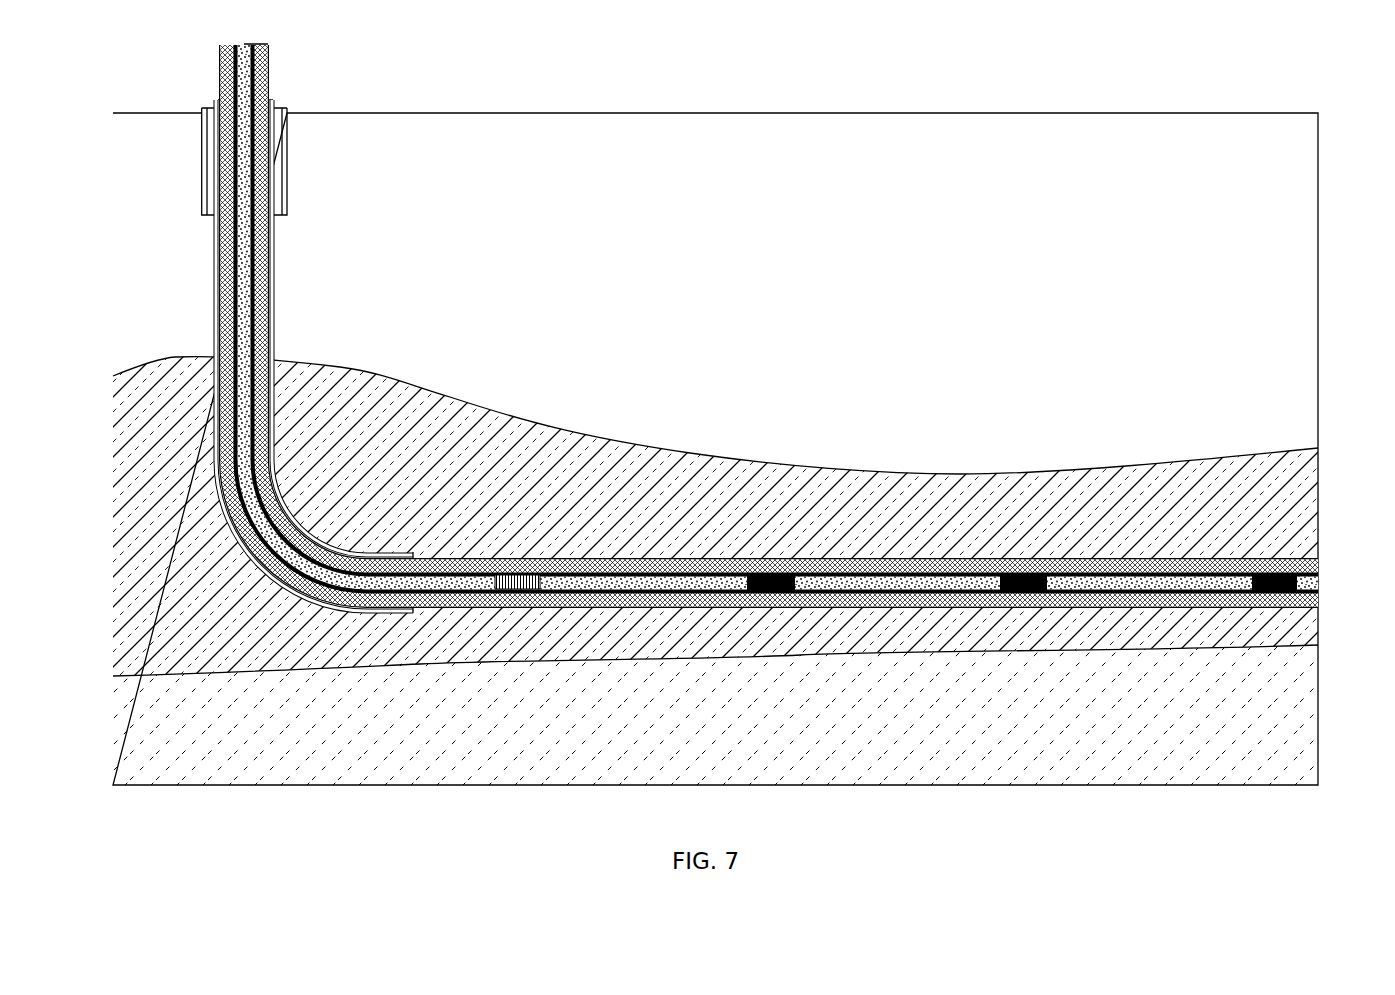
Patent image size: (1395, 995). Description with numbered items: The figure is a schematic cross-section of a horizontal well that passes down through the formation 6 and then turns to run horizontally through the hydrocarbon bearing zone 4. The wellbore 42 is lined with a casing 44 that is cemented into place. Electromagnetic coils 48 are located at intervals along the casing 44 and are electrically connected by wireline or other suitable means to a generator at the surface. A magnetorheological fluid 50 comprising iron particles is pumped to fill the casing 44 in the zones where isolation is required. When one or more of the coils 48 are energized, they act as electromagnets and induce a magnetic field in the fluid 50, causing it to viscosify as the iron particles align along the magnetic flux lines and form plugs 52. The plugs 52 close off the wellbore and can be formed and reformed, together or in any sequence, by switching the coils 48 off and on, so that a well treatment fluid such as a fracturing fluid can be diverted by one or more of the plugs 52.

The hydrocarbon bearing zone 4 is at (393, 481).
The formation 6 is at (847, 234).
The wellbore 42 is at (467, 558).
The casing 44 is at (577, 558).
The electromagnetic coils 48 is at (520, 572).
The magnetorheological fluid 50 is at (662, 575).
The plugs 52 is at (555, 591).